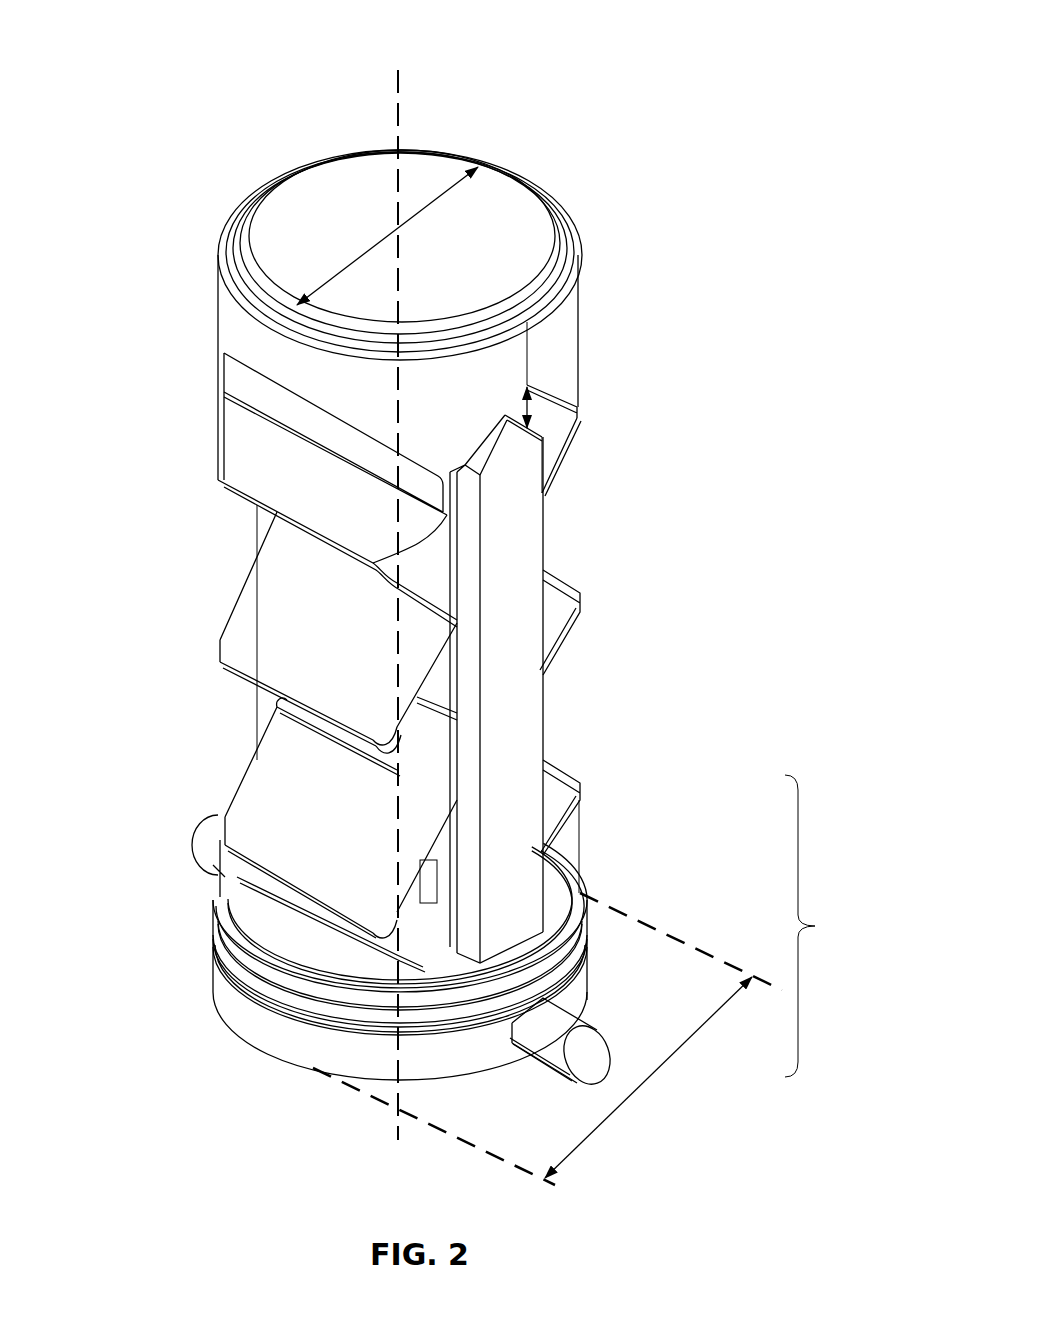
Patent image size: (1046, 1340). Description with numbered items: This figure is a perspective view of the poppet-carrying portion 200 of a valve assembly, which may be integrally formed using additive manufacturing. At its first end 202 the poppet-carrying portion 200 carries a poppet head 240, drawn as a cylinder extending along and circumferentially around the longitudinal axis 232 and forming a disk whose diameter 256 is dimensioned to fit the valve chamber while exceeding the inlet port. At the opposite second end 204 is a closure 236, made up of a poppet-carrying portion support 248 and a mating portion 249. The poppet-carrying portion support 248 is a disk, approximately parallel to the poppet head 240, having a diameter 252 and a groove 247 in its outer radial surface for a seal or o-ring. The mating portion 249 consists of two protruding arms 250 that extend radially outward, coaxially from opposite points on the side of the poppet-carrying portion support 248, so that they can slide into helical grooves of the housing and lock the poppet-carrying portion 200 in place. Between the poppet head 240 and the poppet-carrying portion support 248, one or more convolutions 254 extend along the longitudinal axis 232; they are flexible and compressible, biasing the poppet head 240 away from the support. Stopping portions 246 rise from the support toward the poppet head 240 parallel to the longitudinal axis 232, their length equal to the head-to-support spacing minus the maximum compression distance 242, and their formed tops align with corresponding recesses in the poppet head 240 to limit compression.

The poppet-carrying portion 200 is at (771, 31).
The first end 202 is at (197, 298).
The second end 204 is at (195, 970).
The longitudinal axis 232 is at (397, 117).
The closure 236 is at (827, 926).
The poppet head 240 is at (492, 215).
The maximum compression distance 242 is at (530, 407).
The stopping portion 246 is at (510, 720).
The groove 247 is at (585, 932).
The poppet-carrying portion support 248 is at (577, 987).
The mating portion 249 is at (185, 822).
The protruding arm 250 is at (200, 865).
The diameter 252 is at (660, 1073).
The convolution 254 is at (265, 615).
The diameter 256 is at (468, 165).